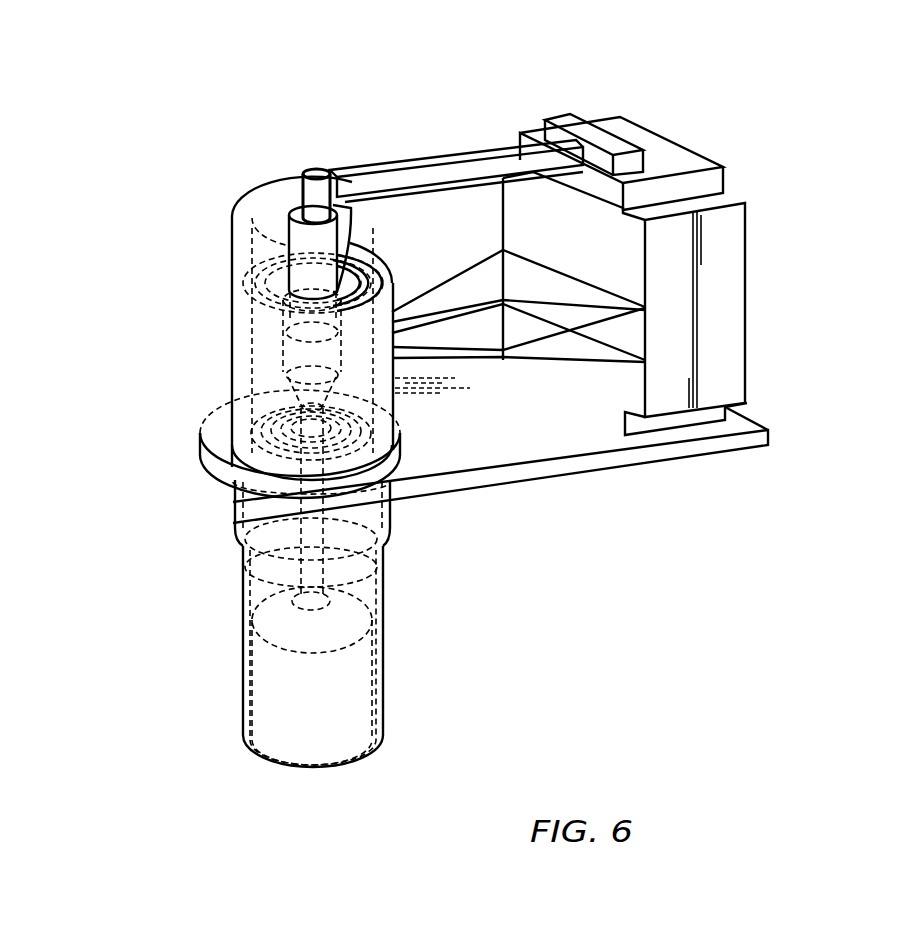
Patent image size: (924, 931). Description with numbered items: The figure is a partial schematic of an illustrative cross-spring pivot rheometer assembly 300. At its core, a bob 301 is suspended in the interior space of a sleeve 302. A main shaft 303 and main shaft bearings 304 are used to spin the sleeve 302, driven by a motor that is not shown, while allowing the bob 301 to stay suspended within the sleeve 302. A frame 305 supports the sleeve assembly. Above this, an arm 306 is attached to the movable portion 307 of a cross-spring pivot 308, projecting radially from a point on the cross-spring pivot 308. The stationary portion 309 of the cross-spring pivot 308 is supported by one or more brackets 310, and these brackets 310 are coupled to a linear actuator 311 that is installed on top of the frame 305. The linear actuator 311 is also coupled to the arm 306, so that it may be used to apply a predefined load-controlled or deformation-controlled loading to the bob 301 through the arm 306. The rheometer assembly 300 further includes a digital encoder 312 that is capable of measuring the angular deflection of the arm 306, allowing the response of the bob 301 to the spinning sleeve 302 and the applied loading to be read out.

The rheometer assembly 300 is at (240, 68).
The bob 301 is at (392, 685).
The sleeve 302 is at (390, 588).
The main shaft 303 is at (390, 517).
The main shaft bearings 304 is at (365, 432).
The frame 305 is at (768, 433).
The arm 306 is at (387, 160).
The movable portion 307 is at (305, 190).
The cross-spring pivot 308 is at (336, 217).
The stationary portion 309 is at (287, 341).
The brackets 310 is at (483, 266).
The linear actuator 311 is at (606, 138).
The digital encoder 312 is at (750, 226).